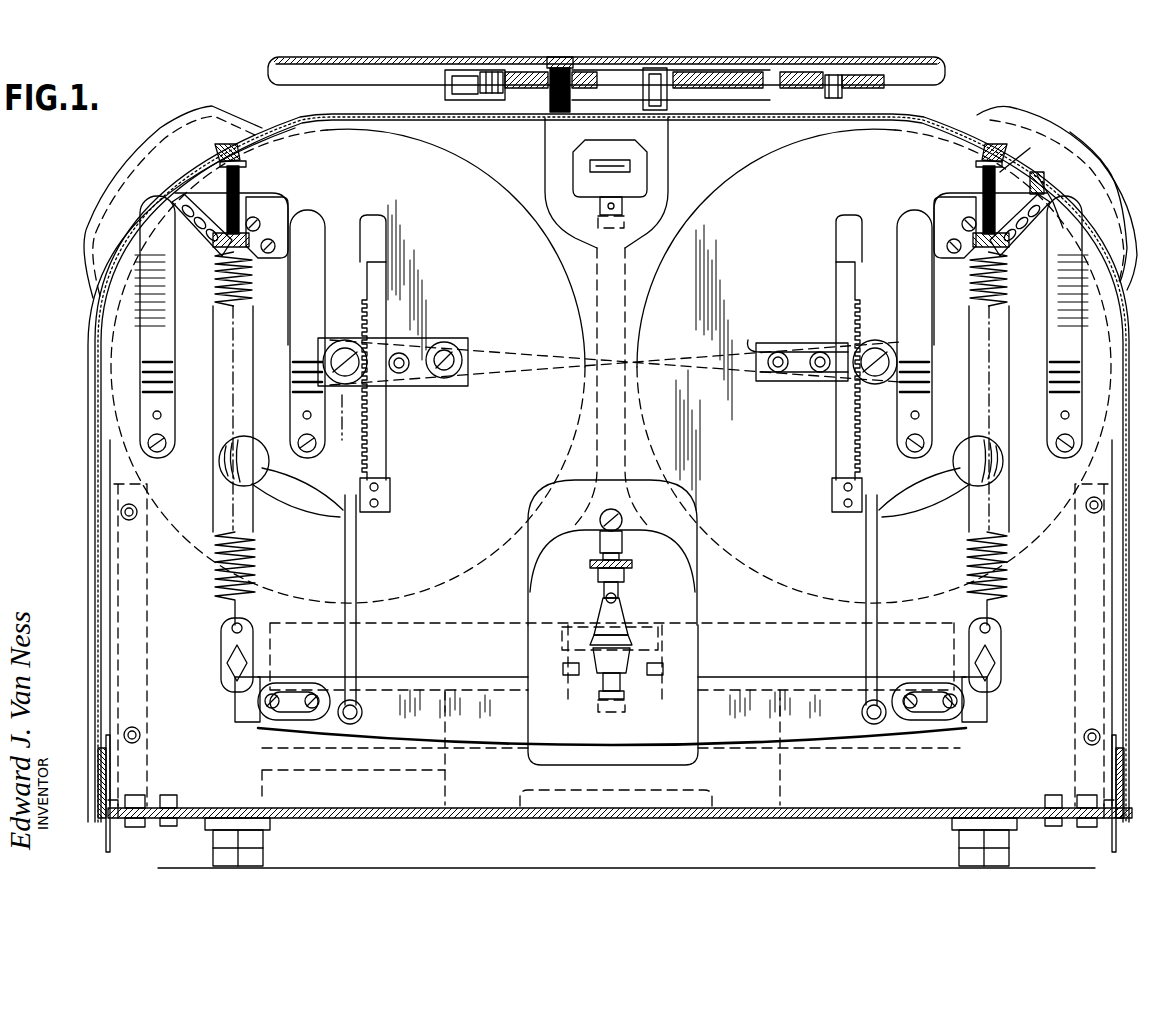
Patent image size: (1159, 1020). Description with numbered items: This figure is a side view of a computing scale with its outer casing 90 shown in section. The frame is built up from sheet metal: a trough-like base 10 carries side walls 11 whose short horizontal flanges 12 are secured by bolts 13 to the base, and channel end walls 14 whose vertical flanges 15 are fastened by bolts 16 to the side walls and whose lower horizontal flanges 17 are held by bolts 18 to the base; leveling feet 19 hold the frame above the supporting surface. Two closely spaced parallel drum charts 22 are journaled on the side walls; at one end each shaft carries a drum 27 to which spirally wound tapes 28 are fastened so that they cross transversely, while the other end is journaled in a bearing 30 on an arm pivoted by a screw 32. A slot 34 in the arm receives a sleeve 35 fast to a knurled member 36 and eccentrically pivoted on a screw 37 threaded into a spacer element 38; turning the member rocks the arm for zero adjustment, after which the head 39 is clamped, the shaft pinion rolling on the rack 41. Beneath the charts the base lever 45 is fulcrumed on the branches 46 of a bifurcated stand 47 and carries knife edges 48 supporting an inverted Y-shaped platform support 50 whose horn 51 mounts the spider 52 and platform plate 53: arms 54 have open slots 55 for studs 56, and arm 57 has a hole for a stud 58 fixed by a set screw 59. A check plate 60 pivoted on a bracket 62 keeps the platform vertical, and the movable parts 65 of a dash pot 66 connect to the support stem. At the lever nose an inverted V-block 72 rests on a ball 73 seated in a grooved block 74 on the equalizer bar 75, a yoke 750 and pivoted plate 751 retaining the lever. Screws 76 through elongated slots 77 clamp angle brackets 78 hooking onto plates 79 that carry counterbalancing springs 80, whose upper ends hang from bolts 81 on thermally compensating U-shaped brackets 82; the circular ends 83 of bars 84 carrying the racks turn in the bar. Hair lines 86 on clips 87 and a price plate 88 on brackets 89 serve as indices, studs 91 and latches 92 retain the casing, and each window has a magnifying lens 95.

The base 10 is at (492, 818).
The side walls 11 is at (425, 130).
The horizontal flanges 12 is at (318, 818).
The bolts 13 is at (172, 828).
The end walls 14 is at (112, 652).
The vertical flanges 15 is at (147, 630).
The bolts 16 is at (136, 520).
The horizontal flanges 17 is at (150, 800).
The bolts 18 is at (135, 828).
The leveling feet 19 is at (262, 845).
The computing drum charts 22 is at (440, 152).
The drums 27 is at (362, 432).
The tapes 28 is at (532, 352).
The bearing 30 is at (362, 348).
The screw 32 is at (401, 374).
The slot 34 is at (750, 340).
The sleeve 35 is at (782, 382).
The knurled member 36 is at (452, 384).
The screw 37 is at (778, 352).
The spacer element 38 is at (775, 375).
The head 39 is at (446, 350).
The rack 41 is at (390, 457).
The base lever 45 is at (895, 766).
The branches 46 is at (345, 745).
The bifurcated stand 47 is at (412, 805).
The knife edges 48 is at (283, 720).
The platform support 50 is at (470, 590).
The horn 51 is at (660, 135).
The spider 52 is at (618, 85).
The platform plate 53 is at (355, 60).
The arms 54 is at (560, 58).
The open slots 55 is at (482, 70).
The studs 56 is at (458, 88).
The arm 57 is at (762, 85).
The stud 58 is at (838, 92).
The set screw 59 is at (880, 88).
The check plate 60 is at (650, 160).
The bracket 62 is at (590, 171).
The movable parts 65 is at (625, 552).
The dash pot 66 is at (665, 808).
The inverted V-block 72 is at (597, 684).
The ball 73 is at (626, 690).
The block 74 is at (598, 706).
The equalizer bar 75 is at (748, 695).
The screws 76 is at (262, 708).
The elongated slots 77 is at (265, 698).
The angle brackets 78 is at (250, 712).
The plate 79 is at (254, 634).
The counterbalancing spring 80 is at (258, 566).
The bolt 81 is at (245, 210).
The U-shaped bracket 82 is at (290, 210).
The circular end 83 is at (348, 725).
The bar 84 is at (358, 552).
The hair lines 86 is at (1040, 170).
The clips 87 is at (210, 272).
The price plate 88 is at (222, 142).
The brackets 89 is at (215, 210).
The casing 90 is at (88, 380).
The studs 91 is at (98, 755).
The latches 92 is at (105, 838).
The lens 95 is at (130, 160).
The yoke 750 is at (628, 625).
The plate 751 is at (600, 625).